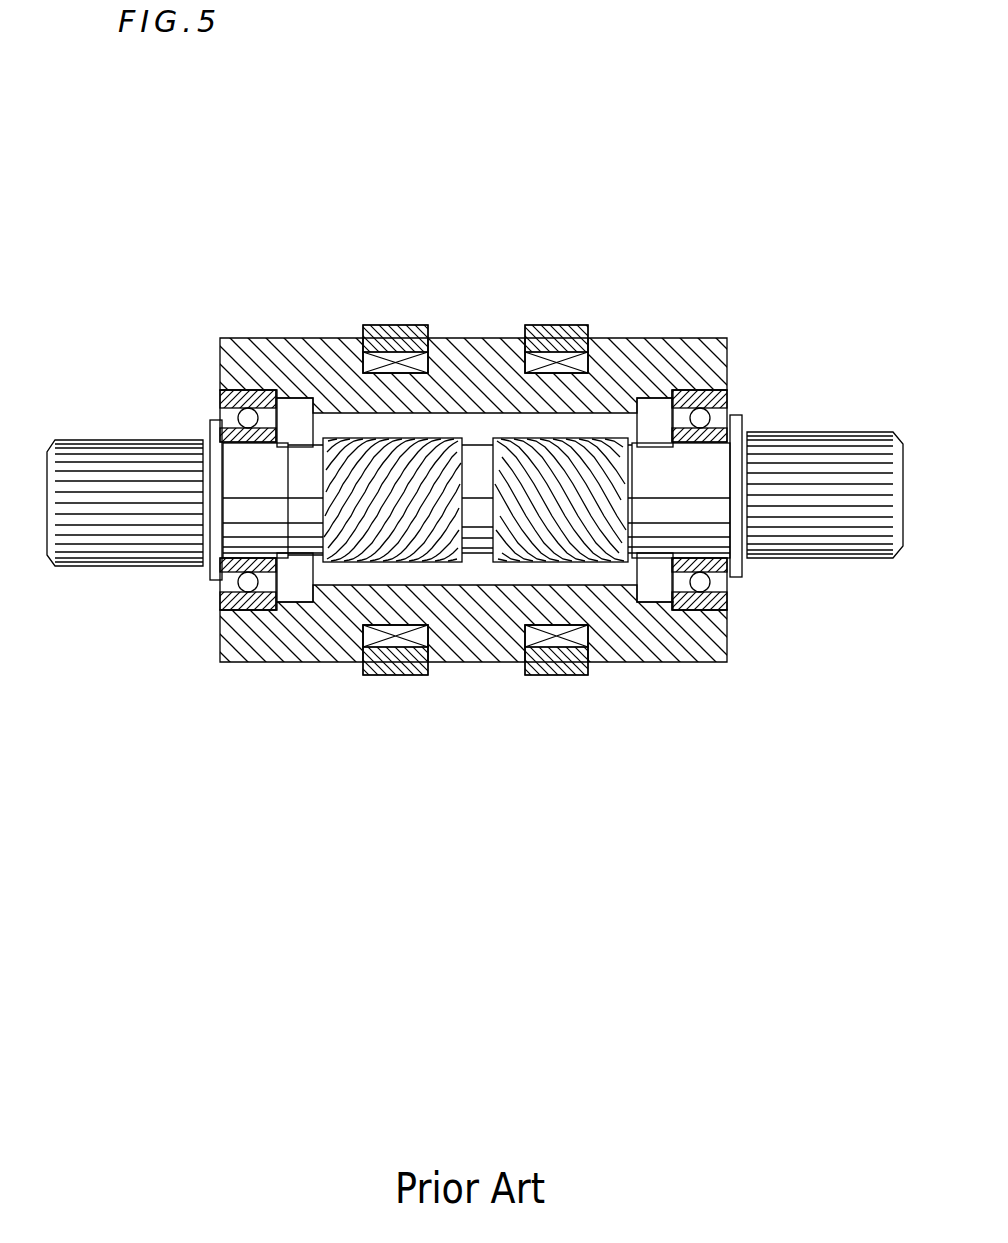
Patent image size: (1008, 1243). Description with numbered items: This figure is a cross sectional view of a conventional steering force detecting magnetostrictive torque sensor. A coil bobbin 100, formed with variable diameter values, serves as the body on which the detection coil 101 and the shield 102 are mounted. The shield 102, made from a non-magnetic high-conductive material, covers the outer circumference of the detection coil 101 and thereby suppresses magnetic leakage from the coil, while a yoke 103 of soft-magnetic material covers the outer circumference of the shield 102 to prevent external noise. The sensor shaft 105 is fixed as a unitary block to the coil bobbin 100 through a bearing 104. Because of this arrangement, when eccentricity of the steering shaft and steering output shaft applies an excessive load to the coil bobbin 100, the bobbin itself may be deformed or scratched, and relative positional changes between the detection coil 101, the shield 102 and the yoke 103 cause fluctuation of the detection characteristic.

The coil bobbin 100 is at (473, 573).
The detection coil 101 is at (475, 500).
The shield 102 is at (479, 498).
The yoke 103 is at (479, 497).
The bearing 104 is at (473, 498).
The sensor shaft 105 is at (309, 410).